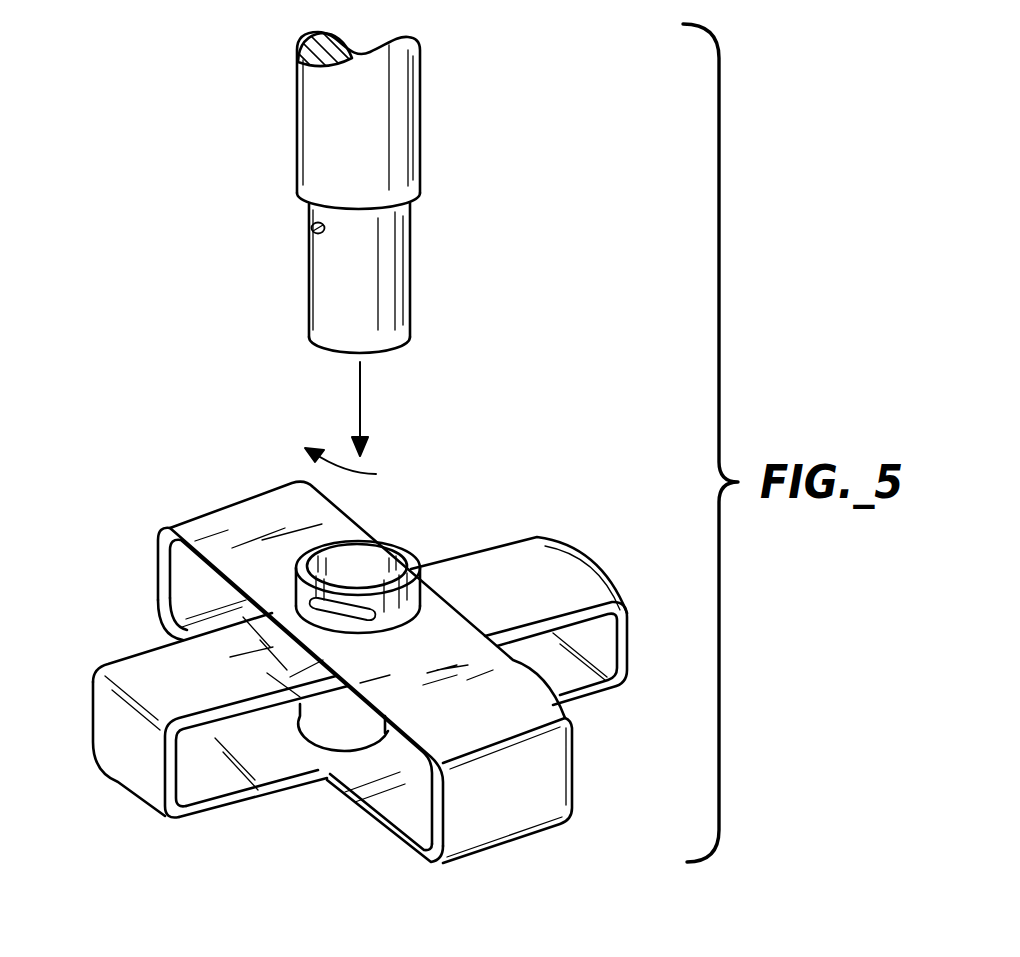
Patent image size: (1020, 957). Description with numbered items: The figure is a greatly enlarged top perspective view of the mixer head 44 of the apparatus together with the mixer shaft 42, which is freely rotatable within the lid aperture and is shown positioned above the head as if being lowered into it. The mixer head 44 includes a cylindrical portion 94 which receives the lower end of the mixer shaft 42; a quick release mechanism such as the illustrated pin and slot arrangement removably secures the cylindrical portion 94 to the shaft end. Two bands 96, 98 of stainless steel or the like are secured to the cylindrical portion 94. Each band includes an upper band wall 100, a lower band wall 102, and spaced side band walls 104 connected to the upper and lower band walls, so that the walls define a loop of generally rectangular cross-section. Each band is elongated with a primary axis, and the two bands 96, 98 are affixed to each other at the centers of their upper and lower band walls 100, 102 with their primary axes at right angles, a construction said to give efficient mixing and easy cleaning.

The mixer shaft 42 is at (328, 290).
The mixer head 44 is at (371, 678).
The cylindrical portion 94 is at (383, 556).
The band 96 is at (553, 773).
The band 98 is at (196, 798).
The upper band wall 100 is at (282, 494).
The lower band wall 102 is at (262, 768).
The side band walls 104 is at (182, 567).